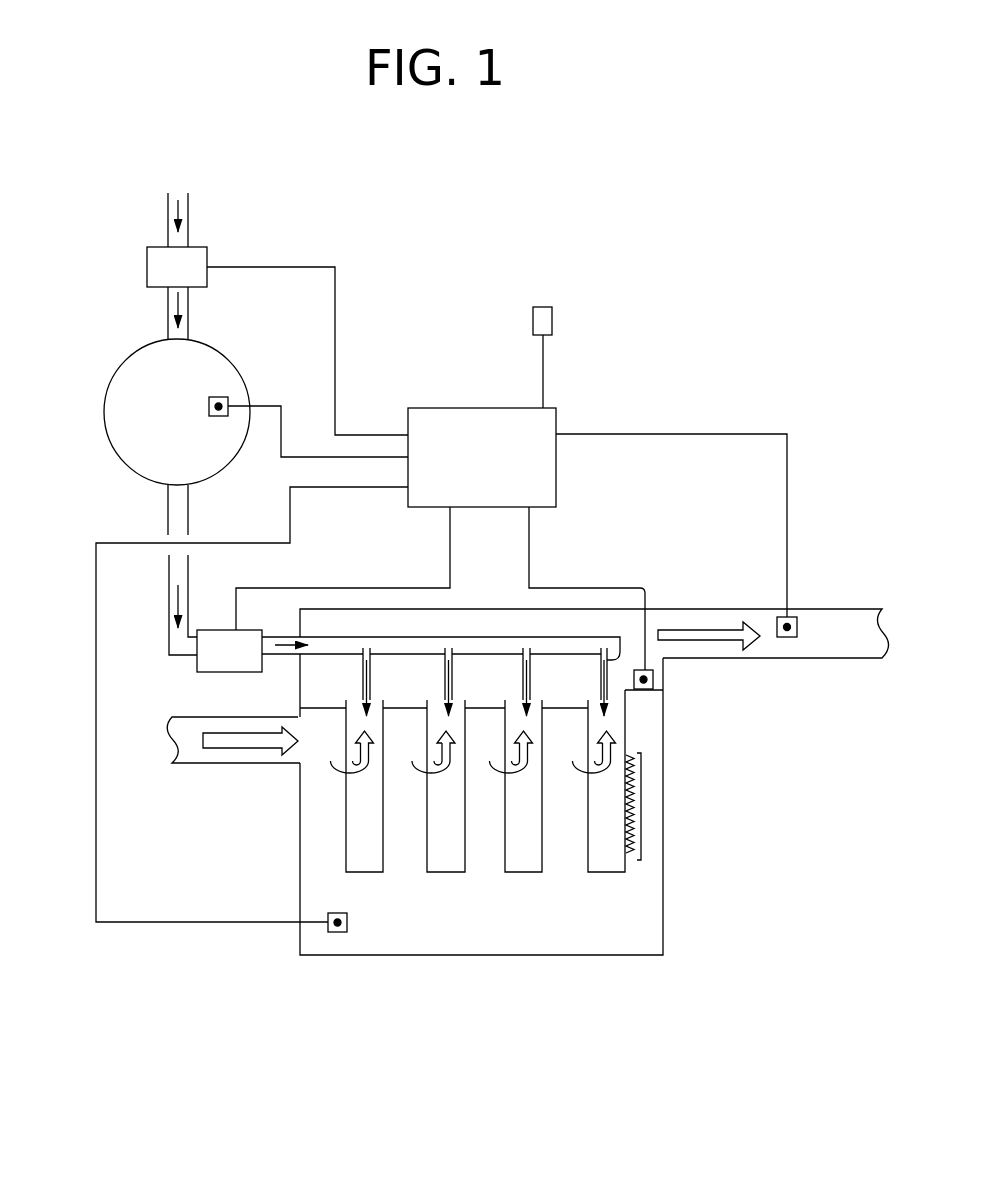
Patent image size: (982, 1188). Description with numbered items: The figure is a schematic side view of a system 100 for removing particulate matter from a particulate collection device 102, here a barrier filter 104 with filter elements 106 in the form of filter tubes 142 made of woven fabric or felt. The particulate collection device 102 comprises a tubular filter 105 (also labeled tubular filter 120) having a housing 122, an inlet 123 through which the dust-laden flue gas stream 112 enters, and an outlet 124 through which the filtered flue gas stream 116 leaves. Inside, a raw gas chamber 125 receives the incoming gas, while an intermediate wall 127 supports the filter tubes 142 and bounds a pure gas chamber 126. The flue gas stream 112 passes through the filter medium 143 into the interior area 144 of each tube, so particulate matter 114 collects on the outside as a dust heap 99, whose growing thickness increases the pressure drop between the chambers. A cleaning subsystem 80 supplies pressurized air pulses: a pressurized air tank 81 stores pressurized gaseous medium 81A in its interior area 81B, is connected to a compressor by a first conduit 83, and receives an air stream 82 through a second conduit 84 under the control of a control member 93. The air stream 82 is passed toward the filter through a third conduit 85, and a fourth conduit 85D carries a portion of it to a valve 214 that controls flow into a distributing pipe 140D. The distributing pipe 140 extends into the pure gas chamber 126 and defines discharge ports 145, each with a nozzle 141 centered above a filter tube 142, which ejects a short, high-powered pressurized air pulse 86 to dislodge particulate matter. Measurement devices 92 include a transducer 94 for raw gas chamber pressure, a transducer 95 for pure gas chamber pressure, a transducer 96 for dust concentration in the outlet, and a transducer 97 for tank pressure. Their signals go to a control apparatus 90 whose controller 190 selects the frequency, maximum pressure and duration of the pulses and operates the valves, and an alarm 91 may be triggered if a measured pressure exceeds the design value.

The system 100 is at (487, 260).
The subsystem 80 is at (152, 645).
The pressurized air tank 81 is at (180, 441).
The pressurized gaseous medium 81A is at (203, 452).
The interior area 81B is at (130, 388).
The air stream 82 is at (188, 202).
The first conduit 83 is at (190, 227).
The second conduit 84 is at (168, 314).
The third conduit 85 is at (168, 512).
The fourth conduit 85D is at (190, 560).
The pressurized air pulse 86 is at (363, 671).
The control apparatus 90 is at (509, 398).
The alarm 91 is at (552, 320).
The measurement devices 92 is at (216, 381).
The control member 93 is at (188, 281).
The transducer 94 is at (347, 922).
The transducer 95 is at (651, 668).
The transducer 96 is at (797, 627).
The transducer 97 is at (210, 398).
The dust heap 99 is at (645, 790).
The particulate collection device 102 is at (680, 826).
The barrier filter 104 is at (663, 851).
The tubular filter 105 is at (663, 893).
The filter elements 106 is at (616, 880).
The flue gas stream 112 is at (411, 754).
The particulate matter 114 is at (287, 756).
The filtered flue gas stream 116 is at (718, 613).
The tubular filter 120 is at (663, 944).
The housing 122 is at (600, 957).
The inlet 123 is at (213, 766).
The outlet 124 is at (838, 607).
The raw gas chamber 125 is at (447, 945).
The pure gas chamber 126 is at (300, 677).
The intermediate wall 127 is at (324, 710).
The distributing pipe 140 is at (524, 625).
The distributing pipe 140D is at (457, 647).
The nozzle 141 is at (618, 662).
The filter tubes 142 is at (387, 858).
The filter medium 143 is at (426, 818).
The interior area 144 is at (381, 846).
The discharge port 145 is at (376, 670).
The controller 190 is at (500, 474).
The valve 214 is at (247, 664).